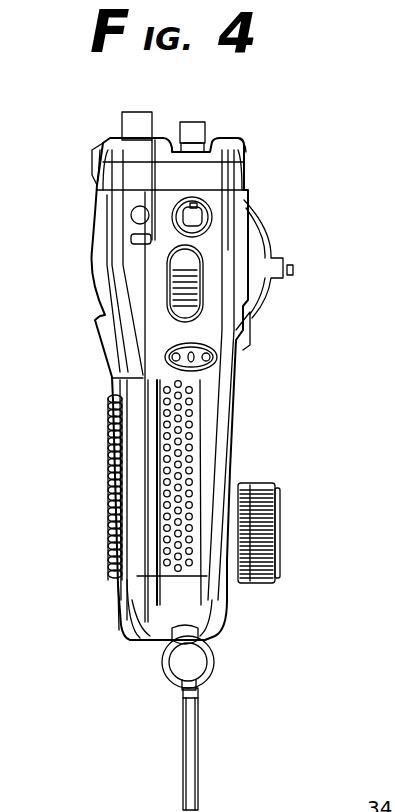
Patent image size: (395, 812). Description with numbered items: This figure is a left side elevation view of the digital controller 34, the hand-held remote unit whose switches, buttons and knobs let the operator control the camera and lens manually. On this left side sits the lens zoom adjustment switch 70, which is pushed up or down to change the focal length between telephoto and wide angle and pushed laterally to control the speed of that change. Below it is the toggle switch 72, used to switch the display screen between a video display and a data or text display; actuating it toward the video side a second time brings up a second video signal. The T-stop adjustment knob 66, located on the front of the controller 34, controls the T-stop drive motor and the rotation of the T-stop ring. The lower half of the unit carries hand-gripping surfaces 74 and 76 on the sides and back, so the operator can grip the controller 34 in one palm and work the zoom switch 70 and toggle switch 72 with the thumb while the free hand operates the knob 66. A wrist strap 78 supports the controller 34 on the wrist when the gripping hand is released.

The digital controller 34 is at (281, 376).
The T-stop adjustment knob 66 is at (270, 482).
The lens zoom adjustment switch 70 is at (167, 272).
The toggle switch 72 is at (165, 358).
The hand-gripping surface 74 is at (175, 495).
The hand-gripping surface 76 is at (112, 472).
The wrist strap 78 is at (198, 758).